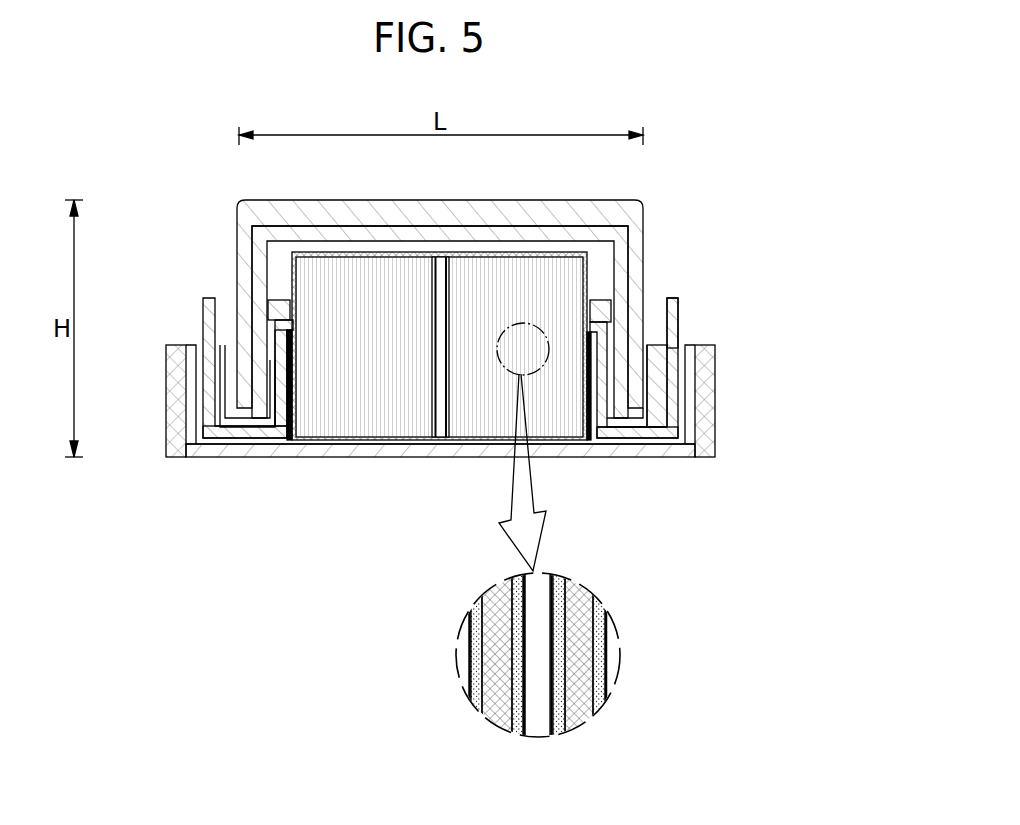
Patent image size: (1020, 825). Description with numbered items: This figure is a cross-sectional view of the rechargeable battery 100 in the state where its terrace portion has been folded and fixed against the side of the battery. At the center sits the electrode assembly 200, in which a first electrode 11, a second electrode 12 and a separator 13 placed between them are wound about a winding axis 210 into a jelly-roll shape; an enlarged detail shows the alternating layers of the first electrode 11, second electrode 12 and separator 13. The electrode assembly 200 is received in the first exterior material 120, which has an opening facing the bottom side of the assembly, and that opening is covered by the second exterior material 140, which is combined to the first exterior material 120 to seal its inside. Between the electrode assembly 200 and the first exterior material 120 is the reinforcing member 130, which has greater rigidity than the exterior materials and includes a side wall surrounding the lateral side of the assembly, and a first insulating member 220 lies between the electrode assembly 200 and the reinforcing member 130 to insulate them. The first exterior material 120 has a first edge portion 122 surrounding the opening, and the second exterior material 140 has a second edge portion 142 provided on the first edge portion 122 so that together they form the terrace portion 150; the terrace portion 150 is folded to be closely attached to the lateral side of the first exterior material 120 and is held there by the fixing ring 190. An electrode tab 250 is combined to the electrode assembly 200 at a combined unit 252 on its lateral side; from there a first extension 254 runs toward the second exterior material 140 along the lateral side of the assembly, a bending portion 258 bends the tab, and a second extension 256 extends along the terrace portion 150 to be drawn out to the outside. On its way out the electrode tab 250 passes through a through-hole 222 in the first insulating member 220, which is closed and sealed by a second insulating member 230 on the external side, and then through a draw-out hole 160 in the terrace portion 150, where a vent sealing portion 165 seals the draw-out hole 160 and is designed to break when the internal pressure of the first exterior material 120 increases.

The rechargeable battery 100 is at (541, 670).
The first electrode 11 is at (572, 613).
The second electrode 12 is at (542, 682).
The separator 13 is at (521, 727).
The first exterior material 120 is at (641, 201).
The first edge portion 122 is at (657, 421).
The reinforcing member 130 is at (657, 360).
The second exterior material 140 is at (430, 453).
The second edge portion 142 is at (691, 416).
The terrace portion 150 is at (490, 429).
The draw-out hole 160 is at (680, 387).
The vent sealing portion 165 is at (686, 347).
The fixing ring 190 is at (709, 397).
The electrode assembly 200 is at (439, 340).
The winding axis 210 is at (454, 300).
The first insulating member 220 is at (538, 252).
The through-hole 222 is at (622, 312).
The second insulating member 230 is at (276, 302).
The electrode tab 250 is at (201, 380).
The combined unit 252 is at (240, 412).
The first extension 254 is at (280, 380).
The second extension 256 is at (225, 438).
The bending portion 258 is at (290, 441).